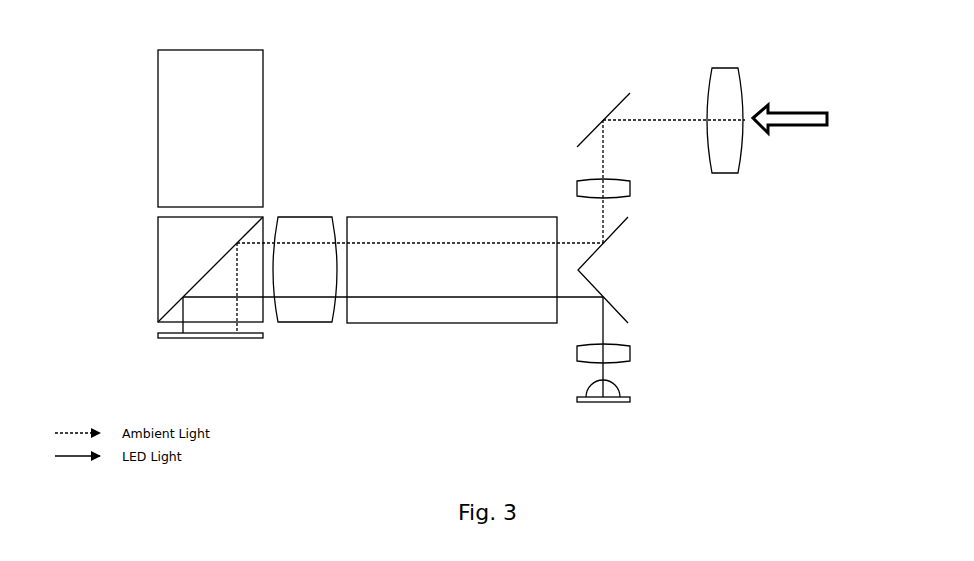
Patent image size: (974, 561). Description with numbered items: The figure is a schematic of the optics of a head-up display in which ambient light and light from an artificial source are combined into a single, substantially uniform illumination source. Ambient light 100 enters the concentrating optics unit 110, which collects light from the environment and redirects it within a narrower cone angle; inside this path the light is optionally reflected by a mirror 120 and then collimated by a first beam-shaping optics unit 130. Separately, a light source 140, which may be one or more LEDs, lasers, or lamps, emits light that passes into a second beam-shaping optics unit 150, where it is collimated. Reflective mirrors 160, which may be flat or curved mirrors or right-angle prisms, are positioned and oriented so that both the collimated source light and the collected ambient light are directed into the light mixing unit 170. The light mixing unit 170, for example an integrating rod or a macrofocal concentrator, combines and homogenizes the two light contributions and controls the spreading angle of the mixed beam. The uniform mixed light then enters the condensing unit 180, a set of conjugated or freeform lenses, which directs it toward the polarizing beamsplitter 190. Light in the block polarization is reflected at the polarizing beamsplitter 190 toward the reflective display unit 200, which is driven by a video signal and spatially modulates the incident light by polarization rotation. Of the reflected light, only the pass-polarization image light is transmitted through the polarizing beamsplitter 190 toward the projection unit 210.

The ambient light 100 is at (848, 128).
The concentrating optics unit 110 is at (764, 104).
The mirror 120 is at (559, 115).
The first beam-shaping optics unit 130 is at (559, 173).
The light source 140 is at (578, 421).
The second beam-shaping optics unit 150 is at (649, 342).
The reflective mirrors 160 is at (645, 270).
The light mixing unit 170 is at (452, 300).
The condensing unit 180 is at (298, 300).
The polarizing beamsplitter 190 is at (160, 269).
The reflective display unit 200 is at (203, 363).
The projection unit 210 is at (256, 128).